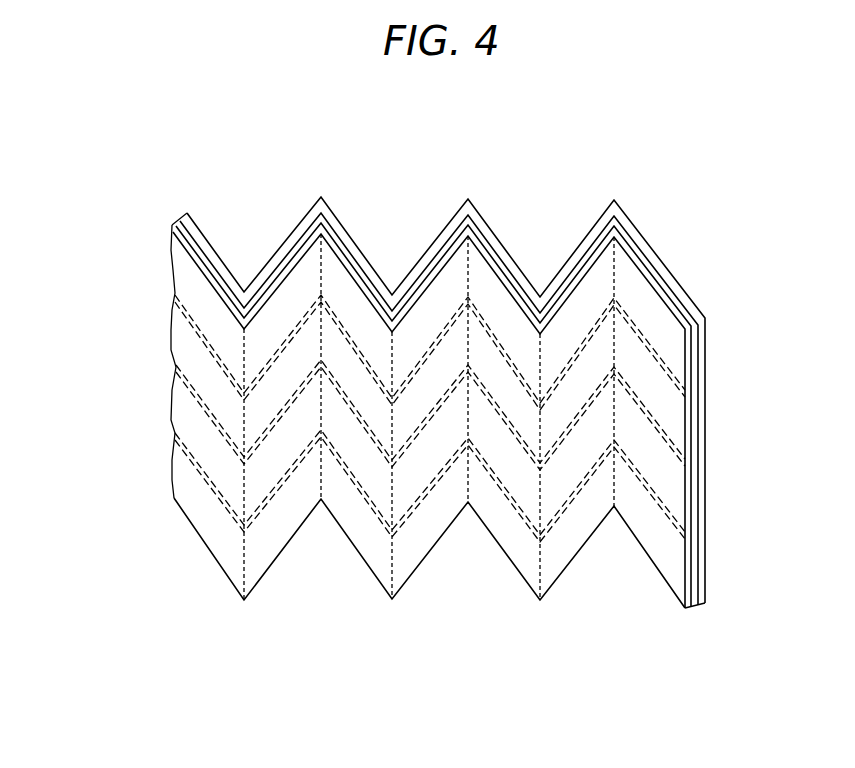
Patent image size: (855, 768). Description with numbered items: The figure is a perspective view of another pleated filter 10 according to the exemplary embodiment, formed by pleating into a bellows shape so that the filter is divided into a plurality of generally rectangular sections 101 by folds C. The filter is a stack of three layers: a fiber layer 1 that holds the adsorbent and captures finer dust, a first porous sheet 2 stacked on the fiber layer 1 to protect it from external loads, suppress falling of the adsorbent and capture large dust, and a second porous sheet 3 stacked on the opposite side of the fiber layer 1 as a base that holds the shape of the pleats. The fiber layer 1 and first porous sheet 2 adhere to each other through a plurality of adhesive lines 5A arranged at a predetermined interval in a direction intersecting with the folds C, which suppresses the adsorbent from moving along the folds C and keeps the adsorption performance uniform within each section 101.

The filter 10 is at (422, 174).
The second porous sheet 3 is at (632, 218).
The fiber layer 1 is at (662, 268).
The first porous sheet 2 is at (692, 302).
The section 101 is at (490, 312).
The adhesive lines 5A is at (660, 482).
The fold C is at (466, 465).